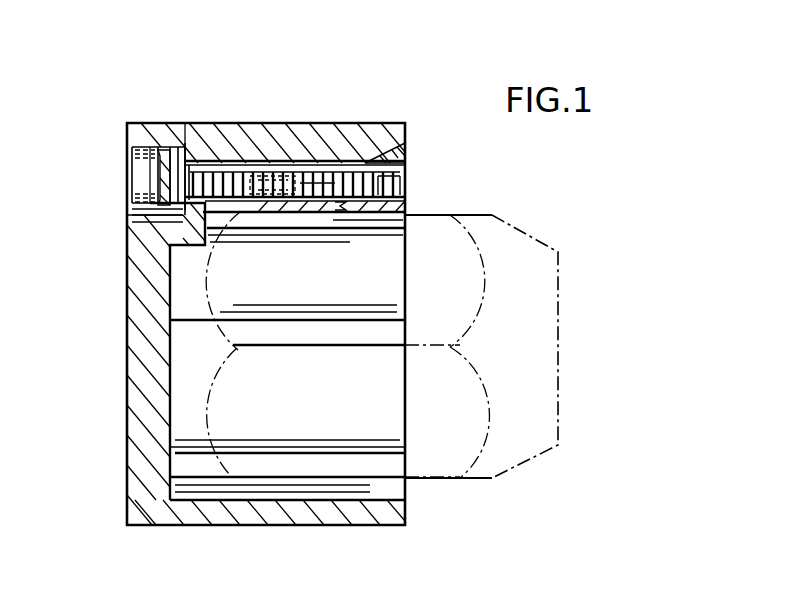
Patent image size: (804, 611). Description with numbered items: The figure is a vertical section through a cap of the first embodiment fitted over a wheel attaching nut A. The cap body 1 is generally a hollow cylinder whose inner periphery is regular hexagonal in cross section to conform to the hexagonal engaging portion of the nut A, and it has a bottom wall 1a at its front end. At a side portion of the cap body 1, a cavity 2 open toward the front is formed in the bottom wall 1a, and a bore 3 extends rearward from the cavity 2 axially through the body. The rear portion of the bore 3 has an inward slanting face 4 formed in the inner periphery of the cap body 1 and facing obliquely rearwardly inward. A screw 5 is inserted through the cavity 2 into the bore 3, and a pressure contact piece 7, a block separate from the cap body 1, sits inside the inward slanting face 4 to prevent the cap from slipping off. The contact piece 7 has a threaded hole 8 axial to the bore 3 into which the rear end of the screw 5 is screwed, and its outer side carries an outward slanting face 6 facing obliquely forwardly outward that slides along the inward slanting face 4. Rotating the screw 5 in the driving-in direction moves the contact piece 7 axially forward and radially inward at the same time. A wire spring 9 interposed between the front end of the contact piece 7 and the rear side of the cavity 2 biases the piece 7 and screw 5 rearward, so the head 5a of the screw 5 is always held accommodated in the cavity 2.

The cap body 1 is at (318, 143).
The bottom wall 1a is at (137, 330).
The cavity 2 is at (132, 222).
The bore 3 is at (160, 183).
The inward slanting face 4 is at (407, 158).
The screw 5 is at (193, 160).
The head 5a is at (138, 173).
The outward slanting face 6 is at (371, 163).
The pressure contact piece 7 is at (407, 205).
The threaded hole 8 is at (407, 180).
The wire spring 9 is at (266, 163).
The wheel attaching nut A is at (473, 482).